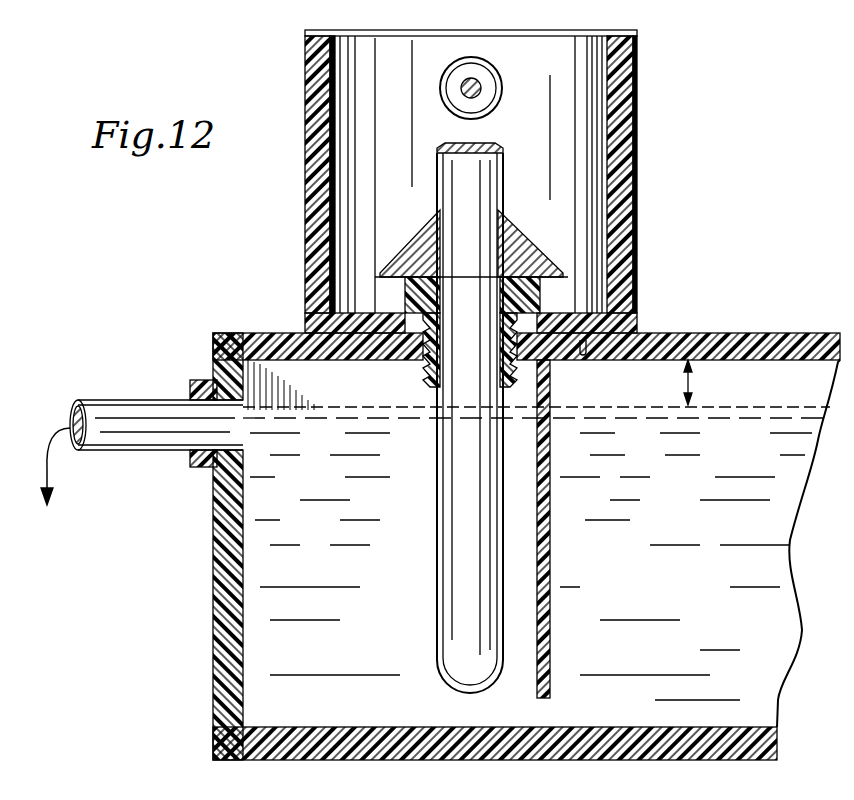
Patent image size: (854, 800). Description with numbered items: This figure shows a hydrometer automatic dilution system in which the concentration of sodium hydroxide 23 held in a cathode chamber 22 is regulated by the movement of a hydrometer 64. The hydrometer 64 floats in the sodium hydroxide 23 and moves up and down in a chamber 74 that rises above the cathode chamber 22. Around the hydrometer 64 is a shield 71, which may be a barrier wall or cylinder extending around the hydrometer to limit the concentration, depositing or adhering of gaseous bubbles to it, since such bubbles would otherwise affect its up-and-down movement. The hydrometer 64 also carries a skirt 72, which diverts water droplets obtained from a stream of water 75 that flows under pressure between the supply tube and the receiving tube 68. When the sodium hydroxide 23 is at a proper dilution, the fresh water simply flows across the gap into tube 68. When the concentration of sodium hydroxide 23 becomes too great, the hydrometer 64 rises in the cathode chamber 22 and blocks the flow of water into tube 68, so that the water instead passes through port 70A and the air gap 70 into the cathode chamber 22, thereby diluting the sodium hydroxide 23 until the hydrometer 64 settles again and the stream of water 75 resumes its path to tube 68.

The cathode chamber 22 is at (213, 566).
The sodium hydroxide 23 is at (710, 532).
The hydrometer 64 is at (437, 512).
The tube 68 is at (490, 67).
The air gap 70 is at (690, 383).
The port 70A is at (583, 355).
The shield 71 is at (552, 540).
The skirt 72 is at (535, 238).
The chamber 74 is at (637, 87).
The stream of water 75 is at (482, 88).